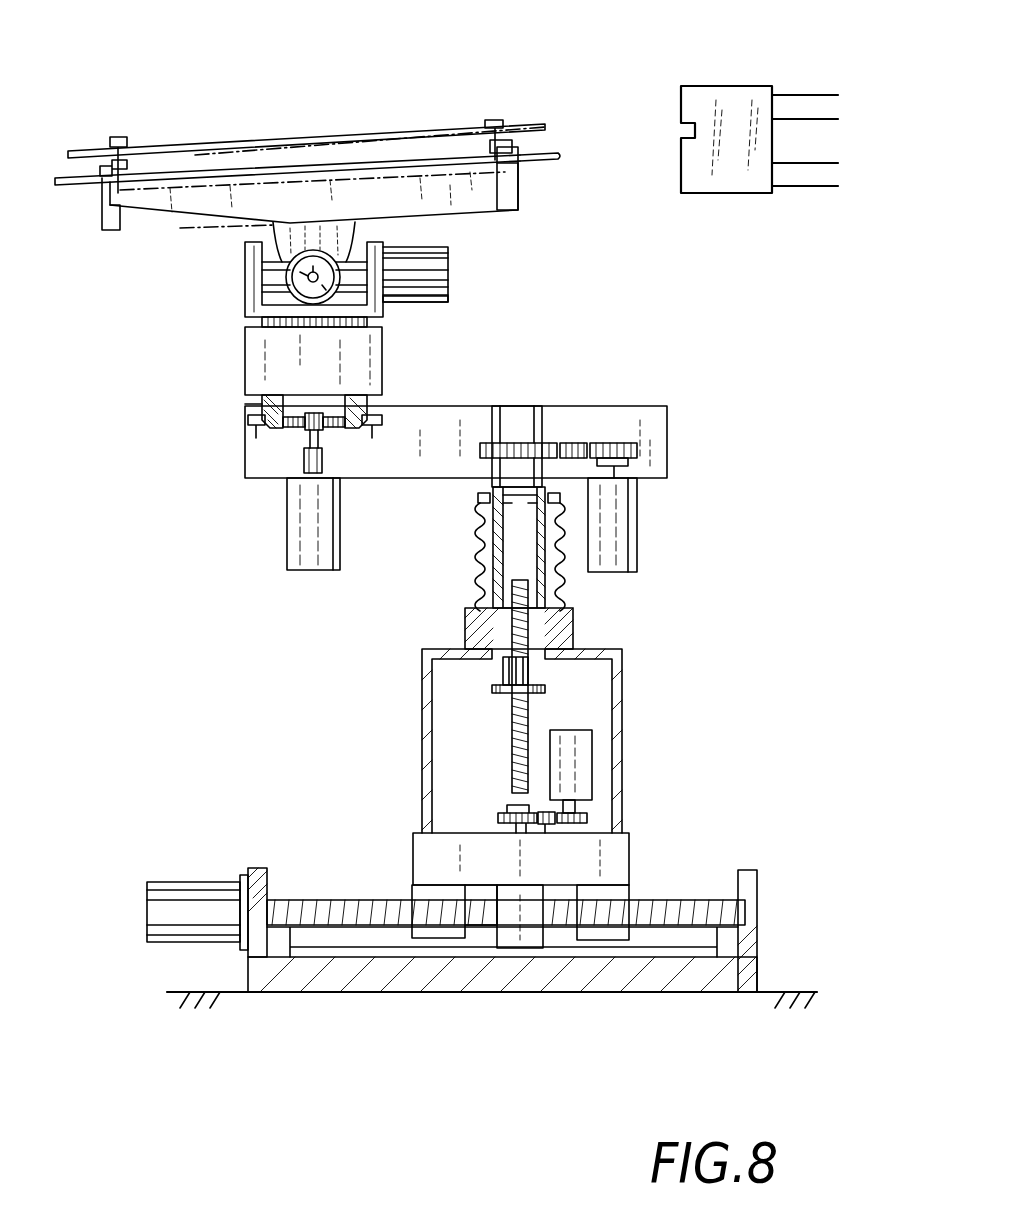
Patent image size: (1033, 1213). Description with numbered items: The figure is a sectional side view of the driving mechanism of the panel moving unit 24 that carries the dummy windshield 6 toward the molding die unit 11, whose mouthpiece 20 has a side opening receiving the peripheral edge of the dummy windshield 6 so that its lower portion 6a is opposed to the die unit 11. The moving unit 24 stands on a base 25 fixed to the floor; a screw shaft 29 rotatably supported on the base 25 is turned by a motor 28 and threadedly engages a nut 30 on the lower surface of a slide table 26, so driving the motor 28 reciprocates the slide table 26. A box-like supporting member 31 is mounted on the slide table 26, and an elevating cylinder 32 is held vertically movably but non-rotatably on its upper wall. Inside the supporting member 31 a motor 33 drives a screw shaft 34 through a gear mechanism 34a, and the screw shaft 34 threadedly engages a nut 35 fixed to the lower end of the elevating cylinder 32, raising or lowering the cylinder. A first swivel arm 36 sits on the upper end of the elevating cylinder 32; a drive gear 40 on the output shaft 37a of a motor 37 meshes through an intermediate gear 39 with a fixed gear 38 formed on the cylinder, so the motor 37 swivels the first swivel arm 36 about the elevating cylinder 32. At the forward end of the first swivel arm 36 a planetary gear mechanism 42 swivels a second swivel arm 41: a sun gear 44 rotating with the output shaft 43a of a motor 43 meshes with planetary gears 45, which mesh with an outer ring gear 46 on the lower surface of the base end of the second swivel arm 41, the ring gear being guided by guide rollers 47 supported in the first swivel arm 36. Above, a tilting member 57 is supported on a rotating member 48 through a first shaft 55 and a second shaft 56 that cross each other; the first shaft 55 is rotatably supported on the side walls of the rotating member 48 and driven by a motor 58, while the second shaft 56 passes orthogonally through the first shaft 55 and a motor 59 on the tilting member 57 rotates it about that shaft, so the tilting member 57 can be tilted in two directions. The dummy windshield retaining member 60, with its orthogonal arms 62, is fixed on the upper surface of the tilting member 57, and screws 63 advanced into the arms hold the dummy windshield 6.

The dummy windshield 6 is at (552, 134).
The lower portion of the dummy windshield 6a is at (542, 128).
The die unit 11 is at (725, 196).
The mouthpiece 20 is at (733, 98).
The moving unit 24 is at (463, 585).
The base 25 is at (397, 978).
The slide table 26 is at (622, 857).
The motor 28 is at (187, 882).
The screw shaft 29 is at (357, 900).
The nut 30 is at (518, 935).
The supporting member 31 is at (620, 712).
The elevating cylinder 32 is at (512, 410).
The motor 33 is at (592, 742).
The screw shaft 34 is at (510, 757).
The gear mechanism 34a is at (597, 810).
The nut 35 is at (515, 677).
The first swivel arm 36 is at (437, 453).
The motor 37 is at (625, 538).
The output shaft 37a is at (638, 480).
The fixed gear 38 is at (480, 452).
The intermediate gear 39 is at (575, 443).
The drive gear 40 is at (625, 445).
The second swivel arm 41 is at (380, 352).
The planetary gear mechanism 42 is at (300, 455).
The motor 43 is at (302, 548).
The output shaft 43a is at (289, 478).
The sun gear 44 is at (313, 413).
The planetary gears 45 is at (288, 415).
The outer ring gear 46 is at (250, 404).
The guide rollers 47 is at (262, 420).
The rotating member 48 is at (255, 302).
The first shaft 55 is at (357, 262).
The second shaft 56 is at (252, 292).
The tilting member 57 is at (296, 232).
The motor 58 is at (440, 287).
The motor 59 is at (427, 302).
The dummy windshield retaining member 60 is at (163, 212).
The arms 62 is at (135, 207).
The screws 63 is at (118, 137).